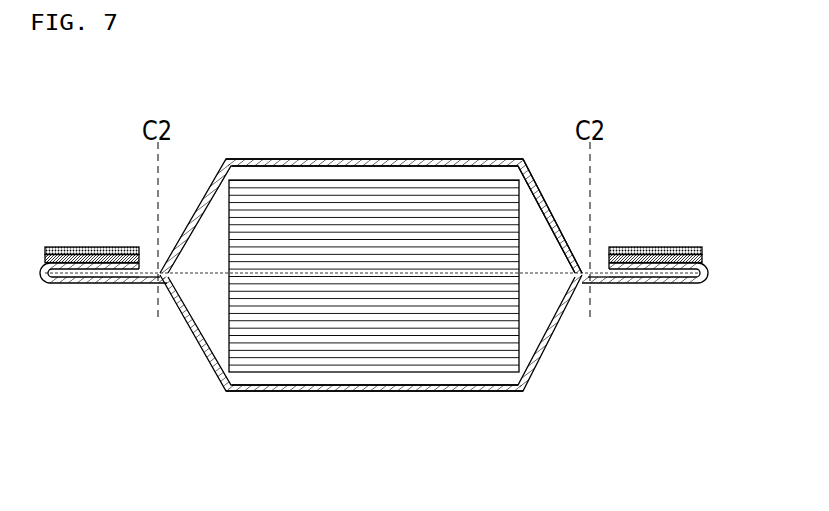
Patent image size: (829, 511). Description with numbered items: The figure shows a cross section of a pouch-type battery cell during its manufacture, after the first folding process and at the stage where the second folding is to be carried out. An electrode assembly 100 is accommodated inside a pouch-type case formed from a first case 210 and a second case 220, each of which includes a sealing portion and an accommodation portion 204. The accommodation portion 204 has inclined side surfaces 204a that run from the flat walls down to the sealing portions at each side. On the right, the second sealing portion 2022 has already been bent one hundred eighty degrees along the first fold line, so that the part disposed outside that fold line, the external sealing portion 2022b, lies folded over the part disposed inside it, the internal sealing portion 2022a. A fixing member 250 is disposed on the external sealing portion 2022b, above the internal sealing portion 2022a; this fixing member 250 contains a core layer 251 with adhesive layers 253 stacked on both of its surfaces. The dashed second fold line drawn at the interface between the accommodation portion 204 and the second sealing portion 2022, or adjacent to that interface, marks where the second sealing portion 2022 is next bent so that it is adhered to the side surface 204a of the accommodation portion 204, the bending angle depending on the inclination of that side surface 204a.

The electrode assembly 100 is at (215, 320).
The accommodation portion 204 is at (380, 160).
The side surface of the accommodation portion 204a is at (553, 200).
The first case 210 is at (273, 153).
The second case 220 is at (275, 402).
The fixing member 250 is at (662, 193).
The core layer 251 is at (652, 247).
The adhesive layer 253 is at (600, 169).
The second sealing portion 2022 is at (672, 345).
The internal sealing portion 2022a is at (647, 285).
The external sealing portion 2022b is at (670, 285).